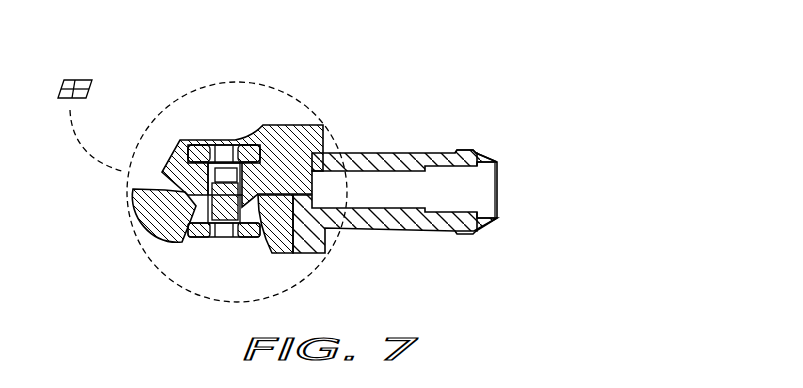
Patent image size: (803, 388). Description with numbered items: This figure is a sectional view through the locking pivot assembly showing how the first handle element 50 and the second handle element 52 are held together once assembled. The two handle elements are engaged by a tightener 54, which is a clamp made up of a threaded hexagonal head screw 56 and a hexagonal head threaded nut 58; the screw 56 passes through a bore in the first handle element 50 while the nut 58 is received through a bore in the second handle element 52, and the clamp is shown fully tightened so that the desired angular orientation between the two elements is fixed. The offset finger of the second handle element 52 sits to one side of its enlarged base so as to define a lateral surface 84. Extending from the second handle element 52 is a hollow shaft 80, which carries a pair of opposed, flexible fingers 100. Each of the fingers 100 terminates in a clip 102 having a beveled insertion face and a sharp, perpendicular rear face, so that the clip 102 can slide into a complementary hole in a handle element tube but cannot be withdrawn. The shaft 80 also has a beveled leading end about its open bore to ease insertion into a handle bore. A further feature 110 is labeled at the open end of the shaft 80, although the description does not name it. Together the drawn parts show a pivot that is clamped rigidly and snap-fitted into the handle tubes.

The first handle element 50 is at (148, 237).
The second handle element 52 is at (365, 232).
The tightener 54 is at (203, 240).
The threaded hexagonal head screw 56 is at (208, 145).
The hexagonal head threaded nut 58 is at (238, 238).
The hollow shaft 80 is at (377, 150).
The lateral surface 84 is at (292, 240).
The flexible fingers 100 is at (447, 150).
The clip 102 is at (460, 150).
The nozzle bore 110 is at (482, 163).